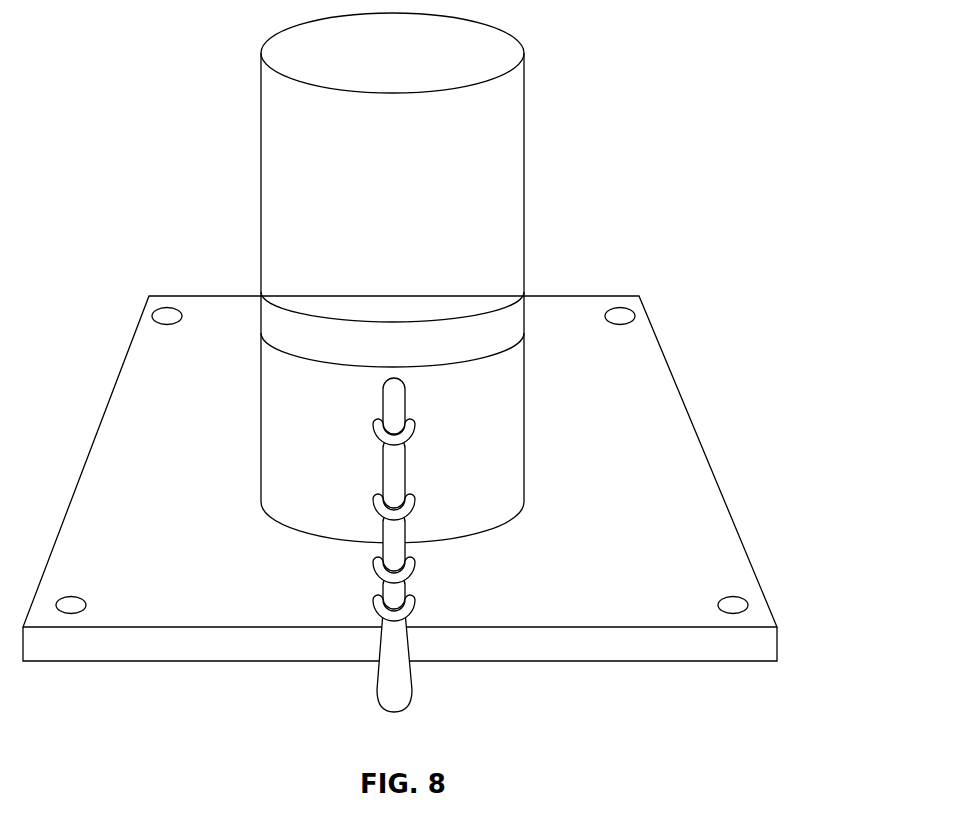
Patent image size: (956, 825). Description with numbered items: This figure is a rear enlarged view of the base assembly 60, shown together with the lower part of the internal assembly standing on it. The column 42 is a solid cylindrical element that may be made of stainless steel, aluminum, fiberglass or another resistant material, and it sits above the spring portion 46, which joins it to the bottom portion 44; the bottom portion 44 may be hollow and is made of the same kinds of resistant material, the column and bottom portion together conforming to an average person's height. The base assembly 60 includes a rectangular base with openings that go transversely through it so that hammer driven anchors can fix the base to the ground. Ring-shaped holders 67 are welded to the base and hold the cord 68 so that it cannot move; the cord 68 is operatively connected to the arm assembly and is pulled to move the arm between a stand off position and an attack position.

The column 42 is at (507, 202).
The bottom portion 44 is at (525, 418).
The spring portion 46 is at (262, 303).
The base assembly 60 is at (709, 456).
The holders 67 is at (408, 608).
The cord 68 is at (403, 667).